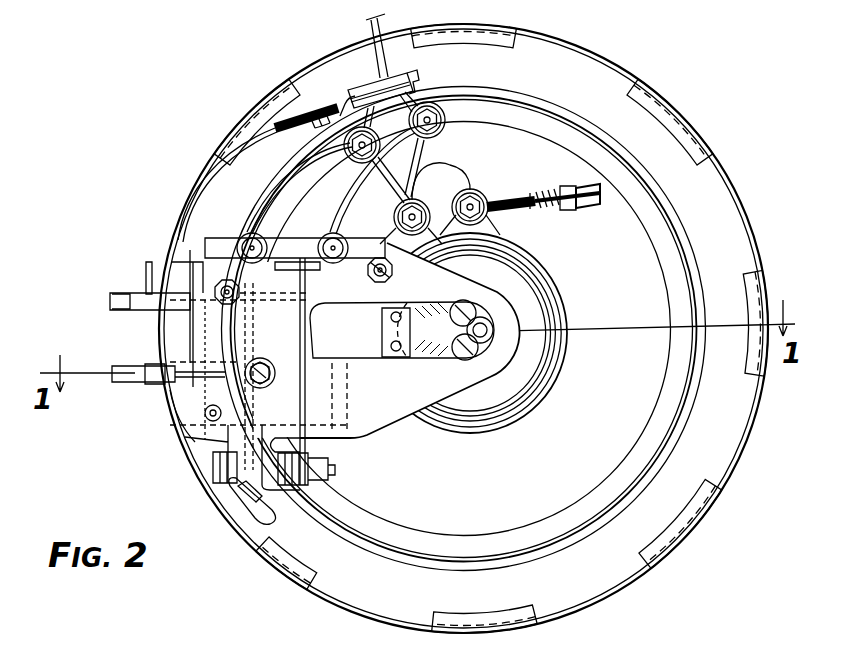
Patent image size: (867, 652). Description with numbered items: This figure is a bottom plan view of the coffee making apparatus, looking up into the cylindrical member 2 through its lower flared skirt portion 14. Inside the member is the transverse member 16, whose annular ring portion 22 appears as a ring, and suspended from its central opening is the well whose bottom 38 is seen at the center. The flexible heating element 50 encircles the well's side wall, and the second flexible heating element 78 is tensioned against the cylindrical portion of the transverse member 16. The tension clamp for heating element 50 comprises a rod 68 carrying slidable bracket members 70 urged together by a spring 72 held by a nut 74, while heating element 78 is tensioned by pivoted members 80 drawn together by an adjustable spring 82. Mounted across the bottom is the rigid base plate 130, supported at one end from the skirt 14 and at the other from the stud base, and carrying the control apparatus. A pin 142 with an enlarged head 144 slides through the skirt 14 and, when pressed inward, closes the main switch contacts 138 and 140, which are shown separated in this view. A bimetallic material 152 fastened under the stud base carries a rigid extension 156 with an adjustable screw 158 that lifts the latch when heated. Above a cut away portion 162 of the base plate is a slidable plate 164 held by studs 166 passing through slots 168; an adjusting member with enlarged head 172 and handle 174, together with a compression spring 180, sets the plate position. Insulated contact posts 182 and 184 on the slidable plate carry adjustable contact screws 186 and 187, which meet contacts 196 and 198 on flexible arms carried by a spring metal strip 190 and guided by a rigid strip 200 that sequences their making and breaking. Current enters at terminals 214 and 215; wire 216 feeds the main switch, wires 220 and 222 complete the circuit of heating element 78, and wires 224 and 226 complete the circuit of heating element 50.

The cylindrical member 2 is at (698, 103).
The lower flared cylindrical wall portion 14 is at (728, 184).
The transverse member 16 is at (688, 279).
The annular ring portion 22 is at (672, 385).
The bottom of the well 38 is at (545, 343).
The flexible heating element 50 is at (569, 382).
The rod 68 is at (600, 204).
The bracket members 70 is at (512, 197).
The spring 72 is at (572, 210).
The nut 74 is at (578, 193).
The second flexible heating element 78 is at (695, 434).
The pivoted members 80 is at (381, 88).
The adjustable spring 82 is at (338, 108).
The base plate 130 is at (393, 420).
The contact 138 is at (224, 348).
The contact 140 is at (262, 376).
The pin 142 is at (157, 385).
The enlarged head 144 is at (190, 355).
The bimetallic material 152 is at (464, 303).
The rigid extension 156 is at (347, 350).
The adjustable screw 158 is at (267, 390).
The cut away portion 162 is at (200, 240).
The slidable plate 164 is at (238, 220).
The studs 166 is at (218, 286).
The slots 168 is at (390, 280).
The enlarged head 172 is at (158, 300).
The handle 174 is at (146, 273).
The compression spring 180 is at (310, 500).
The contact post 182 is at (251, 232).
The contact post 184 is at (398, 235).
The adjustable contact screw 186 is at (283, 238).
The adjustable contact screw 187 is at (318, 238).
The spring metal strip 190 is at (328, 456).
The contact 196 is at (254, 261).
The contact 198 is at (338, 261).
The rigid strip 200 is at (312, 327).
The terminal 214 is at (114, 366).
The terminal 215 is at (112, 301).
The wire 216 is at (272, 512).
The wire 220 is at (402, 143).
The wire 222 is at (303, 168).
The wire 224 is at (472, 188).
The wire 226 is at (232, 200).